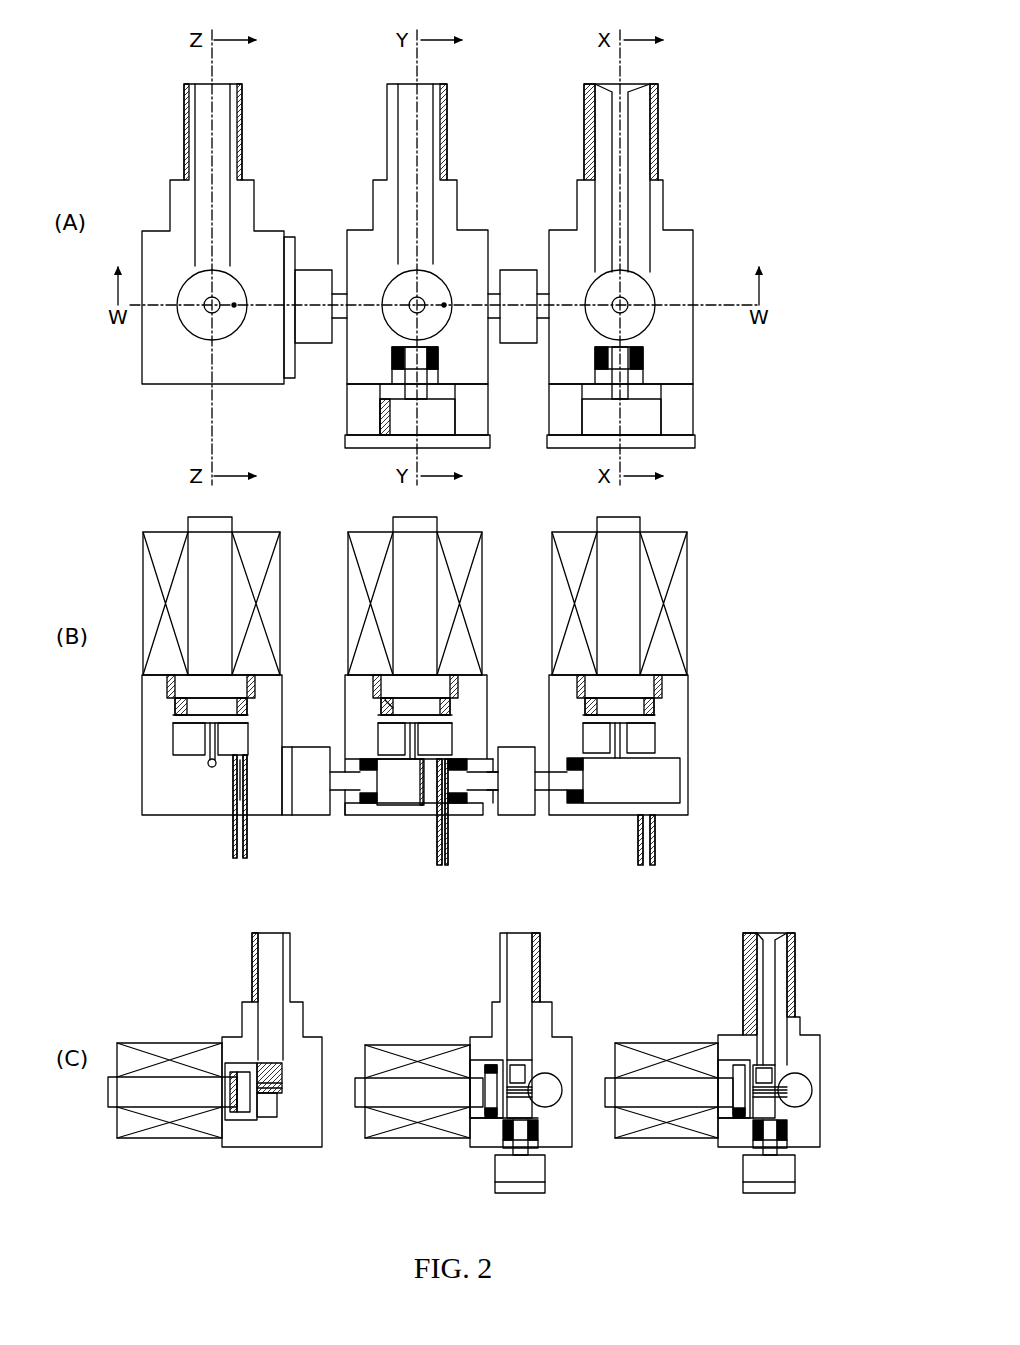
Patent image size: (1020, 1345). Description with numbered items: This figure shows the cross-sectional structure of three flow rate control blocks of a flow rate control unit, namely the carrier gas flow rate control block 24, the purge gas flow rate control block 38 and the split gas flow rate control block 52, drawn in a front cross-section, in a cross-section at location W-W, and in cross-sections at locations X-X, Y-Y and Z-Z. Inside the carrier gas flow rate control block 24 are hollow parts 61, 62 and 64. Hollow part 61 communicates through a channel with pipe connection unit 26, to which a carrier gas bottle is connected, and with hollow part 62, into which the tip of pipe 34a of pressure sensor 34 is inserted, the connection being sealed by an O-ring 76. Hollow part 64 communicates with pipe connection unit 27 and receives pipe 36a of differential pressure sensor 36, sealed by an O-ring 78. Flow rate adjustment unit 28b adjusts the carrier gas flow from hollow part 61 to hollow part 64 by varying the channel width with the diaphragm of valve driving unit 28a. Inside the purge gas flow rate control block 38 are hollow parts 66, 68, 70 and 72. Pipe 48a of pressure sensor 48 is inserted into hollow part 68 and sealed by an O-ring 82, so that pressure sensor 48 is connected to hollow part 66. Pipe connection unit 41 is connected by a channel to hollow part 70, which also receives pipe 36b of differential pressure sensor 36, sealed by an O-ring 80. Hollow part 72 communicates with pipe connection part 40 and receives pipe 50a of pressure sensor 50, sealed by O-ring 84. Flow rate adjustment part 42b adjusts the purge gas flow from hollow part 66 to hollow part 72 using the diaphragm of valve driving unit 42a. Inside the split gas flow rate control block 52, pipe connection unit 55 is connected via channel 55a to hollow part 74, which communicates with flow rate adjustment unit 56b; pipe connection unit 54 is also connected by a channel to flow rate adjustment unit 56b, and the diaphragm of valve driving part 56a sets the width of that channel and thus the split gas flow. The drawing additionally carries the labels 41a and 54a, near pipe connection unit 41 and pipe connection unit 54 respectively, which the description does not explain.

The carrier gas flow rate control block 24 is at (665, 66).
The pipe connection unit 26 is at (658, 94).
The pipe connection unit 27 is at (655, 853).
The valve driving unit 28a is at (688, 580).
The flow rate adjustment unit 28b is at (663, 680).
The pressure sensor 34 is at (691, 443).
The pipe 34a is at (630, 392).
The differential pressure sensor 36 is at (521, 270).
The pipe 36a is at (543, 292).
The pipe 36b is at (495, 292).
The purge gas flow rate control block 38 is at (464, 70).
The pipe connection part 40 is at (447, 94).
The pipe connection unit 41 is at (447, 865).
The passage 41a is at (437, 816).
The valve driving unit 42a is at (482, 580).
The flow rate adjustment part 42b is at (460, 678).
The pressure sensor 48 is at (437, 421).
The pipe 48a is at (426, 400).
The pressure sensor 50 is at (308, 290).
The pipe 50a is at (340, 795).
The split gas flow rate control block 52 is at (251, 66).
The pipe connection unit 54 is at (242, 94).
The housing bore 54a is at (275, 992).
The pipe connection unit 55 is at (233, 848).
The channel 55a is at (233, 800).
The valve driving part 56a is at (265, 562).
The flow rate adjustment unit 56b is at (170, 700).
The hollow part 61 is at (647, 279).
The hollow part 62 is at (632, 378).
The hollow part 64 is at (675, 768).
The hollow part 66 is at (437, 274).
The hollow part 68 is at (428, 385).
The hollow part 70 is at (482, 757).
The hollow part 72 is at (378, 750).
The hollow part 74 is at (236, 274).
The O-ring 76 is at (645, 362).
The O-ring 78 is at (575, 800).
The O-ring 80 is at (457, 805).
The O-ring 82 is at (440, 356).
The O-ring 84 is at (365, 762).